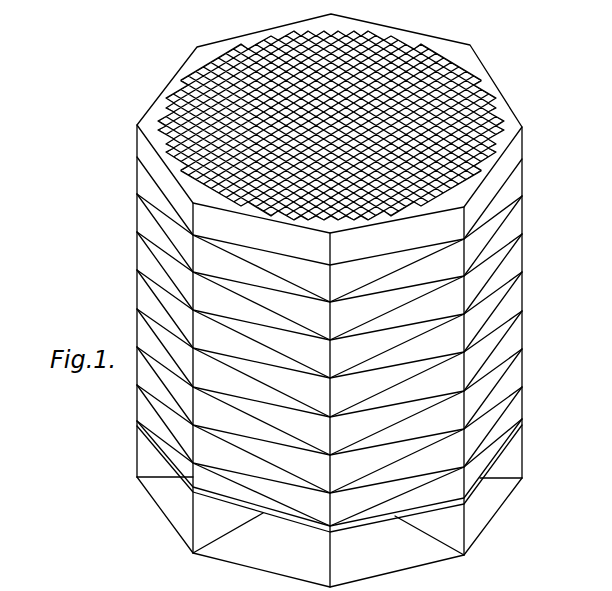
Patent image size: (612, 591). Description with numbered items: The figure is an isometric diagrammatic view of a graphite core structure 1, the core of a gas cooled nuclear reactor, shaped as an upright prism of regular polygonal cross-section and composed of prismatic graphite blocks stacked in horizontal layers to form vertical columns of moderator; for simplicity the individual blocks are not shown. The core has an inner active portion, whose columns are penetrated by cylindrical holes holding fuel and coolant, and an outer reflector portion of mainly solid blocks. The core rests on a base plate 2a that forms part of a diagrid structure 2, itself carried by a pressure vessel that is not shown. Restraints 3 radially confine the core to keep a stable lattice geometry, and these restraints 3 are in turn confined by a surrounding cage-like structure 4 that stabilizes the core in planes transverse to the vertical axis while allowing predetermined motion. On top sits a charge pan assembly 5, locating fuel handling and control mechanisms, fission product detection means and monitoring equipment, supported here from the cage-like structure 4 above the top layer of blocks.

The graphite core structure 1 is at (143, 212).
The diagrid structure 2 is at (522, 451).
The base plate 2a is at (522, 418).
The restraints 3 is at (497, 325).
The cage-like structure 4 is at (507, 260).
The charge pan assembly 5 is at (458, 84).